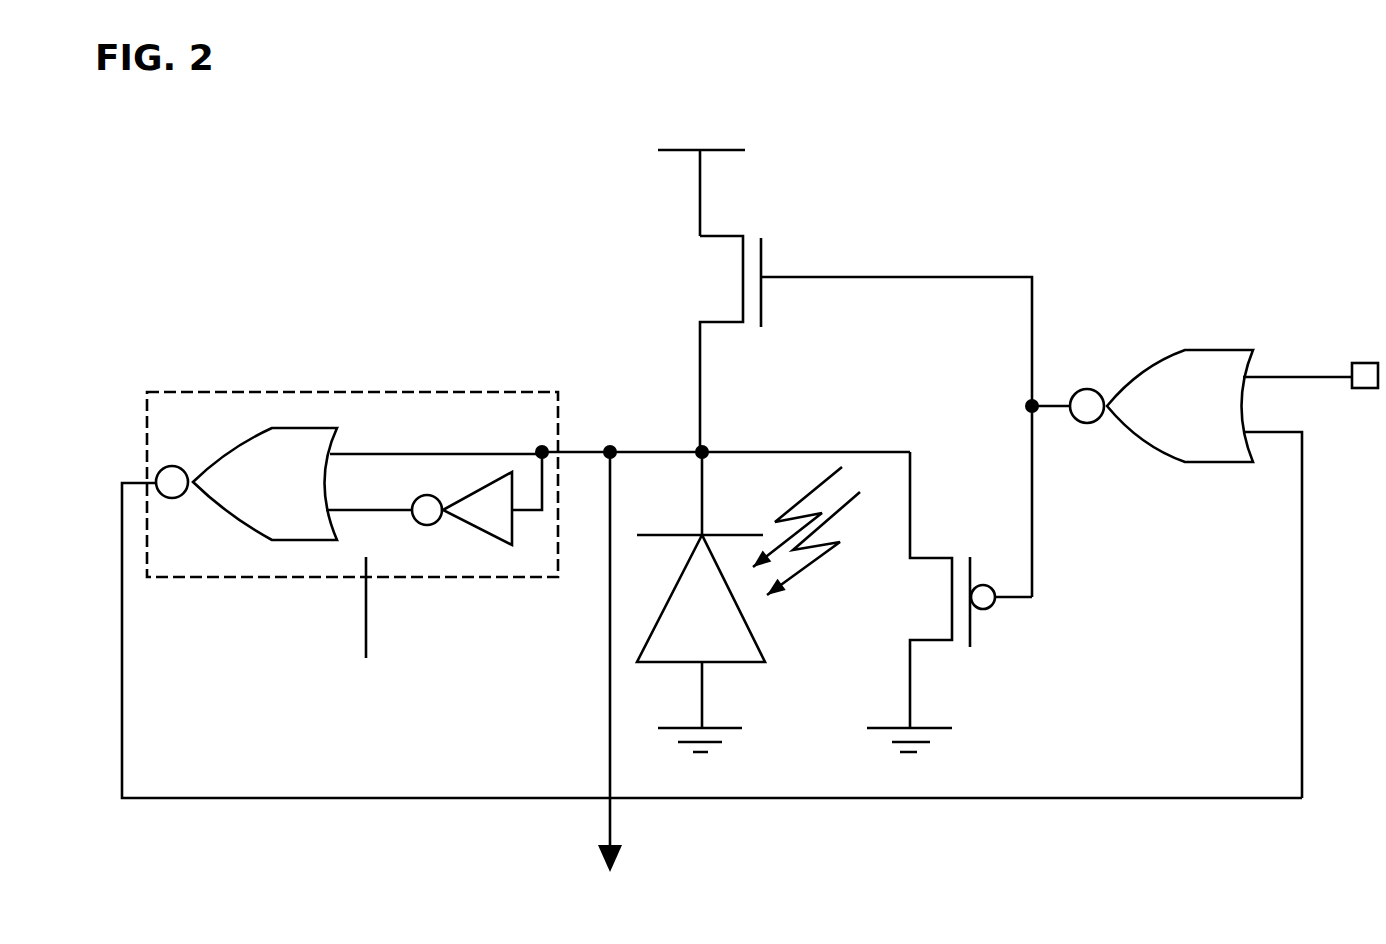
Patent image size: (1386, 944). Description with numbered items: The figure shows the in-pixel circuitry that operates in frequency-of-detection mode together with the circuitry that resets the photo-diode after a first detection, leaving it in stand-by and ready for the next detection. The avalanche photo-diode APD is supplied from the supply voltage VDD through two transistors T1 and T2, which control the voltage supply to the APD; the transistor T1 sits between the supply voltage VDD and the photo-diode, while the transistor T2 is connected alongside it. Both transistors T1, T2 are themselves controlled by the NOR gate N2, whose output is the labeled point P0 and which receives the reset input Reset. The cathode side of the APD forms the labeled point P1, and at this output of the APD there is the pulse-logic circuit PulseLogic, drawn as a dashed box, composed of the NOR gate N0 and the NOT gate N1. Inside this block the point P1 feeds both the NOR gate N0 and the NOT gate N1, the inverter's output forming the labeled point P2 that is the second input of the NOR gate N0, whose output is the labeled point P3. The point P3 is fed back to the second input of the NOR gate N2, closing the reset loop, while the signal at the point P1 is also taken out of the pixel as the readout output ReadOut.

The supply voltage VDD is at (701, 176).
The transistor T1 is at (854, 416).
The transistor T2 is at (949, 602).
The avalanche photo-diode APD is at (748, 602).
The point P0 is at (1025, 393).
The point P1 is at (722, 441).
The point P2 is at (369, 497).
The point P3 is at (698, 625).
The NOR gate N0 is at (349, 484).
The NOT gate N1 is at (477, 498).
The NOR gate N2 is at (1211, 574).
The reset input Reset is at (1346, 357).
The readout output ReadOut is at (677, 662).
The pulse-logic circuit PulseLogic is at (352, 510).